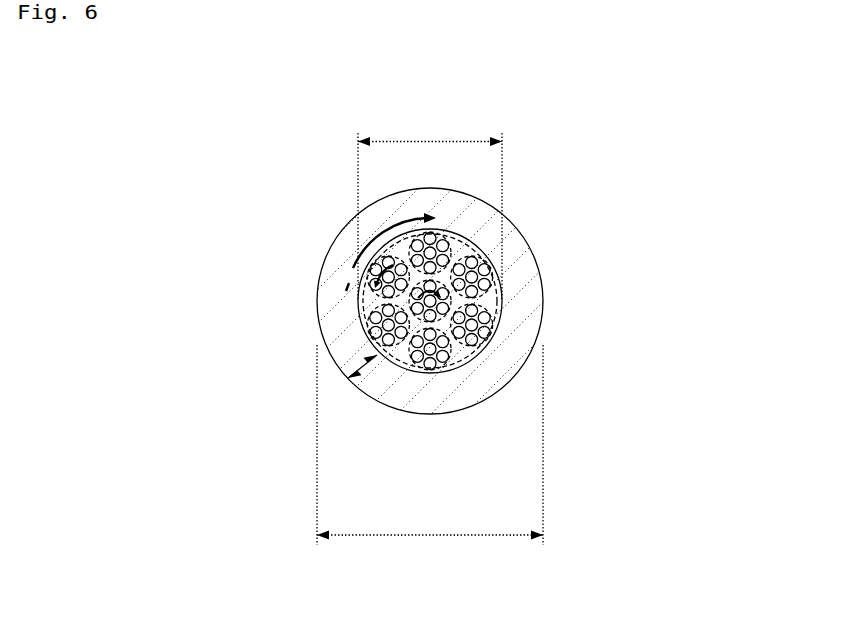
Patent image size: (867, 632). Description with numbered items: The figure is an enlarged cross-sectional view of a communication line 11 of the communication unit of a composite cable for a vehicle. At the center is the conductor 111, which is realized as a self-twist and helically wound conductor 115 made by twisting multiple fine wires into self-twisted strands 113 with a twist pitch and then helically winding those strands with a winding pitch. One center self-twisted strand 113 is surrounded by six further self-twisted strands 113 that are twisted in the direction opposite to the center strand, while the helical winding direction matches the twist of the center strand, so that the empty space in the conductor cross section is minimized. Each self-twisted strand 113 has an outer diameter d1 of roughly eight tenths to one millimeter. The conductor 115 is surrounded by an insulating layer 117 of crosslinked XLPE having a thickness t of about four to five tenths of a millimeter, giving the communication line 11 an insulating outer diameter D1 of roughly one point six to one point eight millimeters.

The cable 11 is at (426, 307).
The conductor 111 is at (480, 262).
The self-twisted strand 113 is at (493, 292).
The self-twist and helically wound conductor 115 is at (471, 359).
The insulating layer 117 is at (481, 410).
The sheath thickness t is at (363, 368).
The outer diameter of self-twisted strand d1 is at (430, 206).
The insulating outer diameter D1 is at (430, 456).